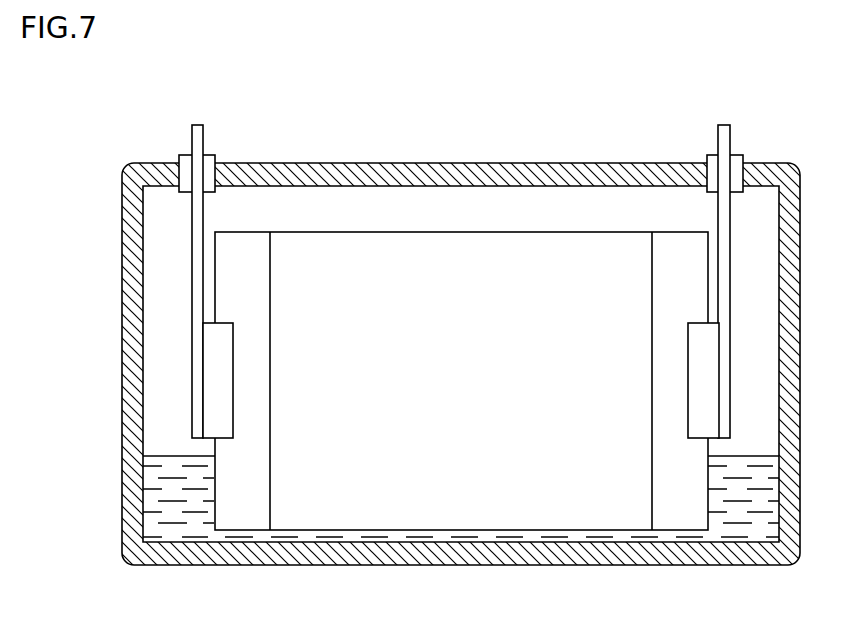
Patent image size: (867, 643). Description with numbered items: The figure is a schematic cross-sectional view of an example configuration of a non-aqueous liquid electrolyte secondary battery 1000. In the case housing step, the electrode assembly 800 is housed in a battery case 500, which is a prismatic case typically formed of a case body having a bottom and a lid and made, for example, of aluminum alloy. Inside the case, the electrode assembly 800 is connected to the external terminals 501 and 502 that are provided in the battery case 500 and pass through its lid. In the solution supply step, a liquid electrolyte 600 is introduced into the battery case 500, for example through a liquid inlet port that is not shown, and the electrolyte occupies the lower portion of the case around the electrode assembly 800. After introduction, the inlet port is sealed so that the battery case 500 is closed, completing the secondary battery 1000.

The battery case 500 is at (525, 176).
The external terminal 501 is at (197, 124).
The external terminal 502 is at (723, 124).
The liquid electrolyte 600 is at (748, 512).
The electrode assembly 800 is at (462, 327).
The non-aqueous liquid electrolyte secondary battery 1000 is at (800, 93).